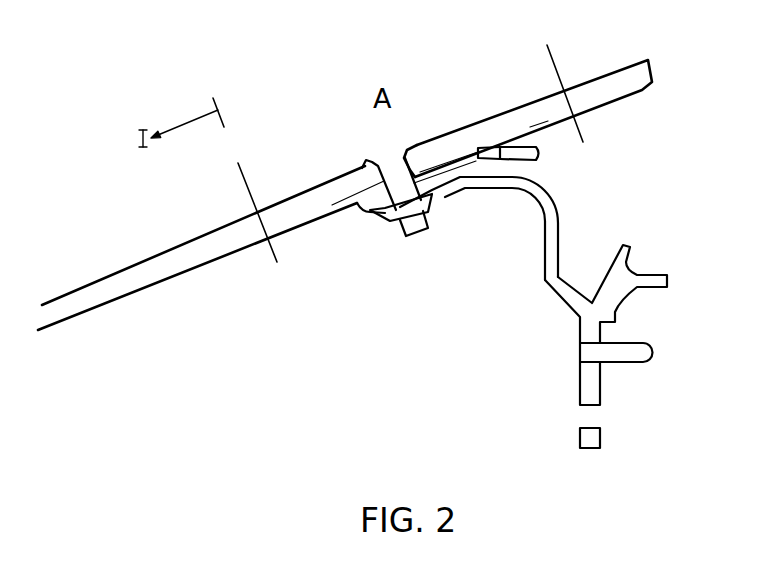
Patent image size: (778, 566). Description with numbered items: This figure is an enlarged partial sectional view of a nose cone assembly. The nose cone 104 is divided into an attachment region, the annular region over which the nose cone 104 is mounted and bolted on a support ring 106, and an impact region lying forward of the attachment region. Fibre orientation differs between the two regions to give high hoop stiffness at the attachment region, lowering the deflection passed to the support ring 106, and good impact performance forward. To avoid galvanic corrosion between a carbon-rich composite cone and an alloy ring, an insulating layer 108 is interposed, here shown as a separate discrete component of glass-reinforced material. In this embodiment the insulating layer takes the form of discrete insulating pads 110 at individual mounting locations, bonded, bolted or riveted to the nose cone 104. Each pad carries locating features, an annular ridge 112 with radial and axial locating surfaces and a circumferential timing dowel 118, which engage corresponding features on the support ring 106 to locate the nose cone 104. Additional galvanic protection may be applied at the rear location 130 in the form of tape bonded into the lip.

The nose cone 104 is at (100, 278).
The support ring 106 is at (528, 315).
The insulating layer 108 is at (346, 210).
The insulating pads 110 is at (450, 180).
The annular ridge 112 is at (497, 142).
The circumferential timing dowel 118 is at (540, 153).
The location at the rear of the nose cone 130 is at (637, 87).